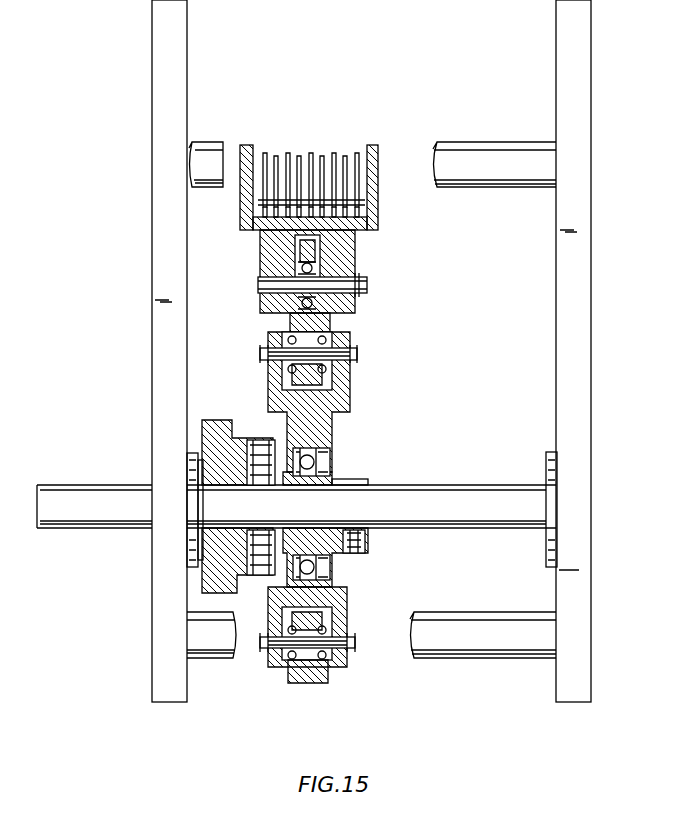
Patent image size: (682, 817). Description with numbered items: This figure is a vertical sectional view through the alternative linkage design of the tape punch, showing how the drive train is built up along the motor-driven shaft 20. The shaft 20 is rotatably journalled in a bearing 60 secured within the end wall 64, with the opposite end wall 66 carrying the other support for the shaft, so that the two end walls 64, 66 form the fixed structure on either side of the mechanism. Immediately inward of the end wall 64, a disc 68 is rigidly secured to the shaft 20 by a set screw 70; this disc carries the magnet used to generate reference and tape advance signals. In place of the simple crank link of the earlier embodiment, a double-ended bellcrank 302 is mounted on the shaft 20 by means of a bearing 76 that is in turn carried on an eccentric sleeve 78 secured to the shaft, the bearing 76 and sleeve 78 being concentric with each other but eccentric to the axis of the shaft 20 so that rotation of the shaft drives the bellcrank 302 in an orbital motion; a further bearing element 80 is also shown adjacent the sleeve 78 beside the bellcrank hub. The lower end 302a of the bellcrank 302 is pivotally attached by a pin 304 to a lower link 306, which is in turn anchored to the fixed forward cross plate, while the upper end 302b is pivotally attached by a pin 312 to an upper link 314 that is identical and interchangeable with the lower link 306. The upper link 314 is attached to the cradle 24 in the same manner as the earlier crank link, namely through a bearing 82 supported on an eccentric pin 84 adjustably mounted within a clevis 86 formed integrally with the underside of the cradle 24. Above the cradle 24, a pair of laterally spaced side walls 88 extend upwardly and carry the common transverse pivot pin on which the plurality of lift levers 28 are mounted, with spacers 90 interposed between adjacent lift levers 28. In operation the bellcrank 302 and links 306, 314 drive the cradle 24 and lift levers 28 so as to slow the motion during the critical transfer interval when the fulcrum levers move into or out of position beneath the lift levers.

The shaft 20 is at (49, 488).
The cradle 24 is at (385, 158).
The lift levers 28 is at (275, 156).
The spacers 90 is at (310, 158).
The side walls 88 is at (250, 204).
The clevis 86 is at (355, 253).
The bearing 82 is at (300, 265).
The eccentric pin 84 is at (367, 292).
The upper link 314 is at (330, 324).
The pin 312 is at (357, 352).
The upper end of the bellcrank 302b is at (345, 407).
The bellcrank 302 is at (342, 445).
The bearing 76 is at (325, 468).
The sleeve 78 is at (368, 482).
The bearing 80 is at (346, 553).
The bearing 60 is at (187, 558).
The disc 68 is at (210, 578).
The set screw 70 is at (256, 575).
The end wall 64 is at (170, 656).
The end wall 66 is at (585, 658).
The pin 304 is at (262, 648).
The lower end of the bellcrank 302a is at (280, 660).
The lower link 306 is at (312, 670).